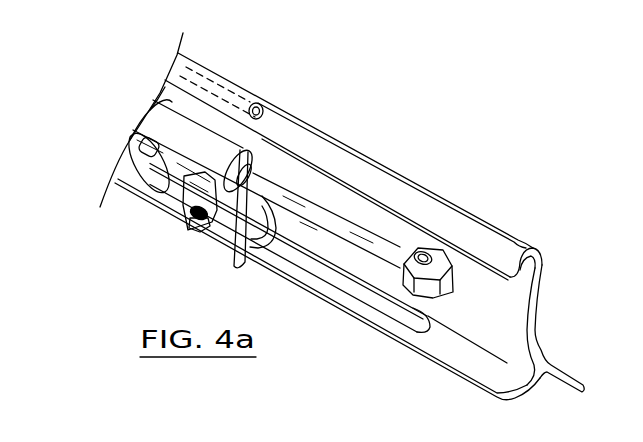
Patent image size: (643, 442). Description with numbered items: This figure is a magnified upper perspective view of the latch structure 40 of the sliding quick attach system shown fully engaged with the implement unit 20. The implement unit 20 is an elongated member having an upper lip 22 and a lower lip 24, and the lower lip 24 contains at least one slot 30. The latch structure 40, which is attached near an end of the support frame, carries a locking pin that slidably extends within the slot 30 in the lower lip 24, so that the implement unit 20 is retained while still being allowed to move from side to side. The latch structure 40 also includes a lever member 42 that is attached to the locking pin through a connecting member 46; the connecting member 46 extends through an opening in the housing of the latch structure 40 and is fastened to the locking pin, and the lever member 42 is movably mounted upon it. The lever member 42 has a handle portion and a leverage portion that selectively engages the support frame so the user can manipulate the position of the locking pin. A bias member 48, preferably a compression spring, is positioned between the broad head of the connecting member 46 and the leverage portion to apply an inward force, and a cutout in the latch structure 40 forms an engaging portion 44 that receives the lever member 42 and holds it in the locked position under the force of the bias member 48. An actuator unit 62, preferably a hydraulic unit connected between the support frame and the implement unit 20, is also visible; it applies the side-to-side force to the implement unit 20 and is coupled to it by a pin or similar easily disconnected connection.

The implement unit 20 is at (408, 170).
The upper lip 22 is at (520, 240).
The lower lip 24 is at (467, 358).
The slot 30 is at (403, 315).
The latch structure 40 is at (168, 205).
The lever member 42 is at (235, 268).
The engaging portion 44 is at (262, 190).
The connecting member 46 is at (197, 237).
The bias member 48 is at (203, 236).
The actuator unit 62 is at (262, 110).